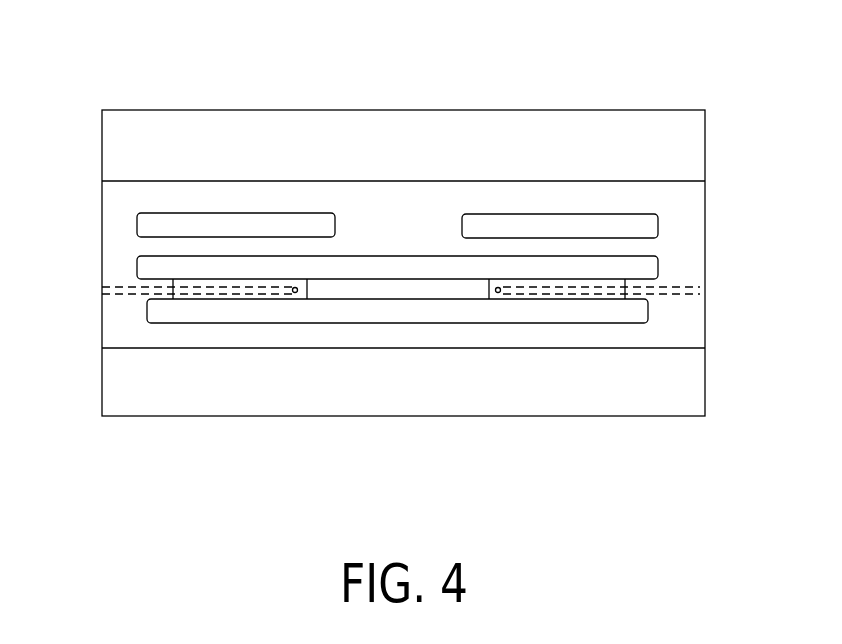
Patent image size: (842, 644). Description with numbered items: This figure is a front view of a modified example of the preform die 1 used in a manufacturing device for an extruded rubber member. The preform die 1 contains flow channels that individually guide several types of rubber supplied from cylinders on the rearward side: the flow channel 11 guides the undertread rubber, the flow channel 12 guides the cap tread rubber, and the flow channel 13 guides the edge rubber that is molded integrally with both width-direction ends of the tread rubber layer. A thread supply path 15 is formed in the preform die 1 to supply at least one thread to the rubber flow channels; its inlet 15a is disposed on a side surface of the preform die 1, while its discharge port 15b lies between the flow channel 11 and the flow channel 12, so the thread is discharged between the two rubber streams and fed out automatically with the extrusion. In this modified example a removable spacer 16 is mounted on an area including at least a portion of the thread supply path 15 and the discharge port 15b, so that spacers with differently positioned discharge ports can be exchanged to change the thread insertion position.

The preform die 1 is at (401, 110).
The flow channel 11 is at (371, 314).
The flow channel 12 is at (443, 264).
The flow channel 13 is at (235, 222).
The thread supply path 15 is at (125, 285).
The inlet 15a is at (103, 289).
The discharge port 15b is at (295, 294).
The spacer 16 is at (227, 299).